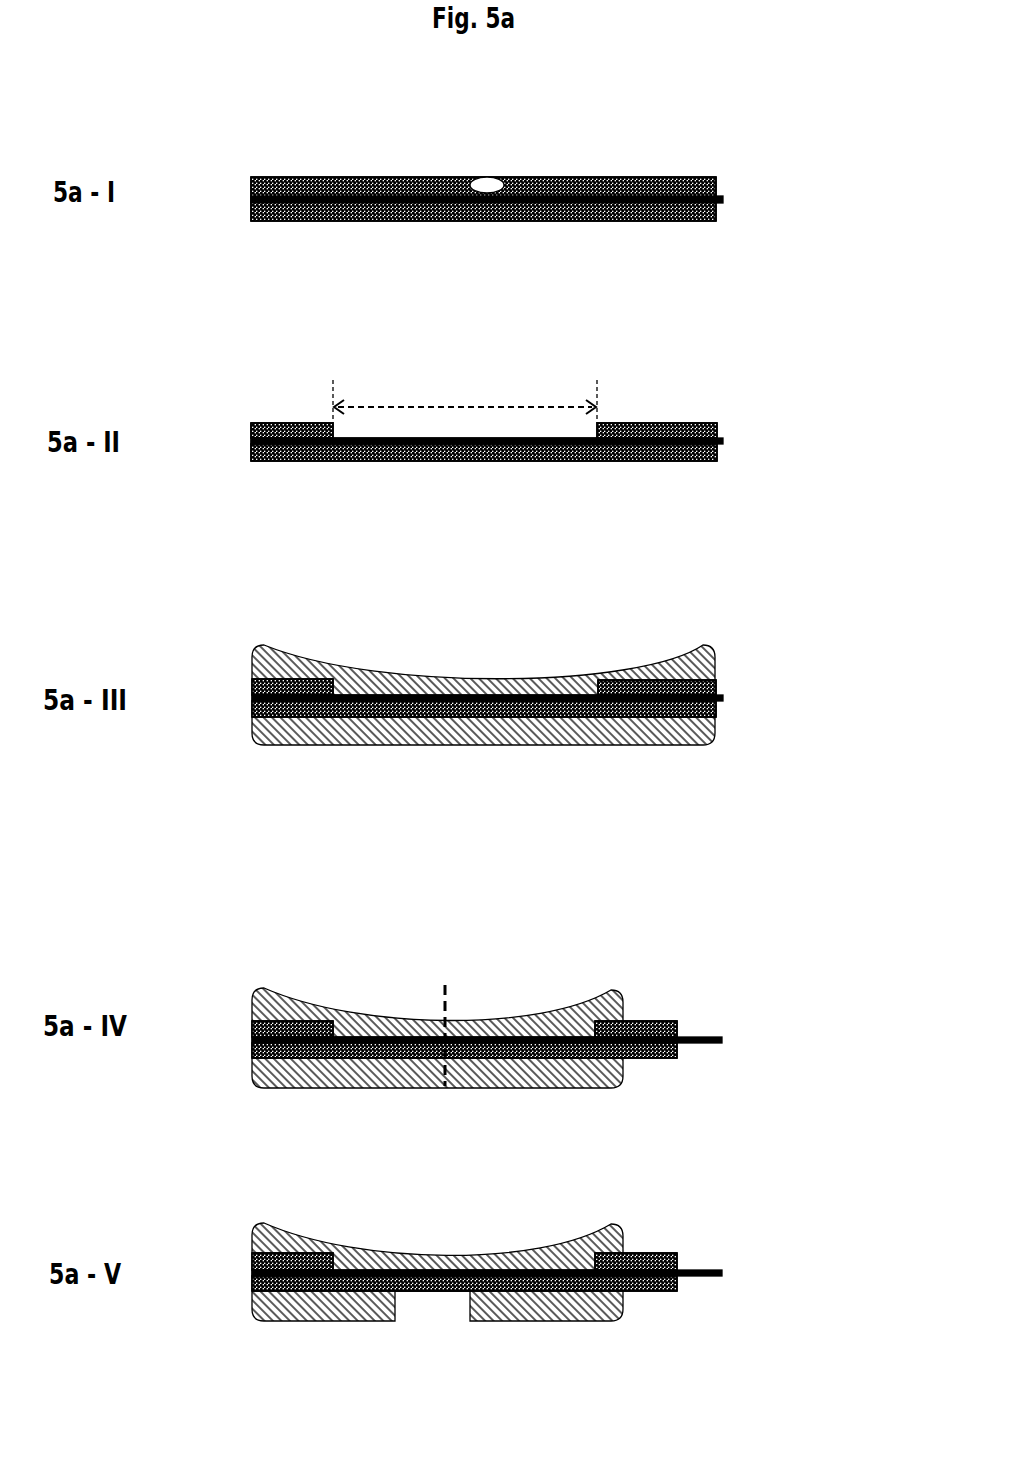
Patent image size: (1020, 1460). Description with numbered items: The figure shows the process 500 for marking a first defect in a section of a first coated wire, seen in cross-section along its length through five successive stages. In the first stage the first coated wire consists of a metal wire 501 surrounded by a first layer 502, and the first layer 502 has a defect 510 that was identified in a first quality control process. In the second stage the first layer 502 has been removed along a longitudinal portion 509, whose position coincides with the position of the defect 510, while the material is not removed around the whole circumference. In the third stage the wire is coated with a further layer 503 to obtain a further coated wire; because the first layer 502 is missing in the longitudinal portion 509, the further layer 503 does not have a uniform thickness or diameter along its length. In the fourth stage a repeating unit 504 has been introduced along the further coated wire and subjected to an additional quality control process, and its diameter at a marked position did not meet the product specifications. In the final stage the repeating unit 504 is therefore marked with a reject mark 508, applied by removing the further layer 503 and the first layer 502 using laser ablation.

The process 500 is at (884, 82).
The metal wire 501 is at (724, 201).
The first layer 502 is at (507, 213).
The further layer 503 is at (712, 738).
The repeating unit 504 is at (720, 955).
The reject mark 508 is at (422, 1307).
The longitudinal portion 509 is at (465, 396).
The defect 510 is at (487, 180).